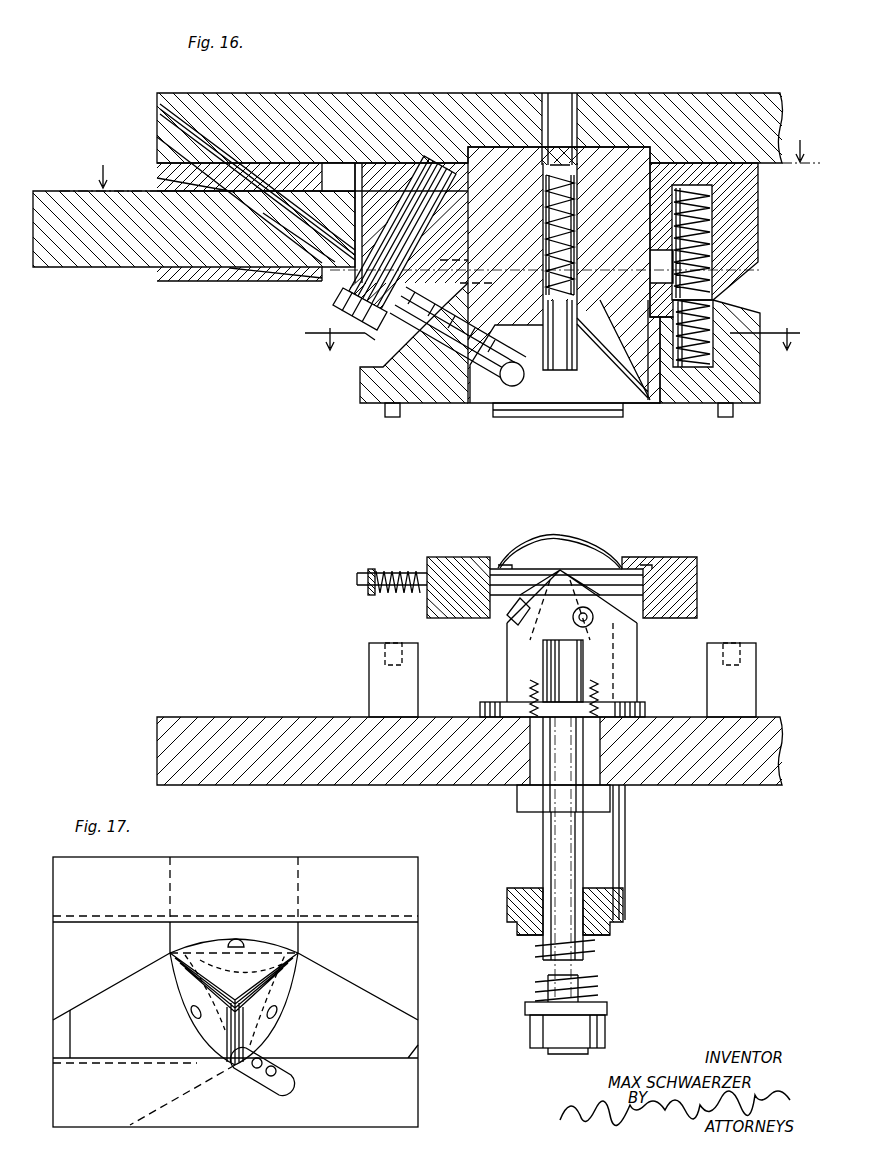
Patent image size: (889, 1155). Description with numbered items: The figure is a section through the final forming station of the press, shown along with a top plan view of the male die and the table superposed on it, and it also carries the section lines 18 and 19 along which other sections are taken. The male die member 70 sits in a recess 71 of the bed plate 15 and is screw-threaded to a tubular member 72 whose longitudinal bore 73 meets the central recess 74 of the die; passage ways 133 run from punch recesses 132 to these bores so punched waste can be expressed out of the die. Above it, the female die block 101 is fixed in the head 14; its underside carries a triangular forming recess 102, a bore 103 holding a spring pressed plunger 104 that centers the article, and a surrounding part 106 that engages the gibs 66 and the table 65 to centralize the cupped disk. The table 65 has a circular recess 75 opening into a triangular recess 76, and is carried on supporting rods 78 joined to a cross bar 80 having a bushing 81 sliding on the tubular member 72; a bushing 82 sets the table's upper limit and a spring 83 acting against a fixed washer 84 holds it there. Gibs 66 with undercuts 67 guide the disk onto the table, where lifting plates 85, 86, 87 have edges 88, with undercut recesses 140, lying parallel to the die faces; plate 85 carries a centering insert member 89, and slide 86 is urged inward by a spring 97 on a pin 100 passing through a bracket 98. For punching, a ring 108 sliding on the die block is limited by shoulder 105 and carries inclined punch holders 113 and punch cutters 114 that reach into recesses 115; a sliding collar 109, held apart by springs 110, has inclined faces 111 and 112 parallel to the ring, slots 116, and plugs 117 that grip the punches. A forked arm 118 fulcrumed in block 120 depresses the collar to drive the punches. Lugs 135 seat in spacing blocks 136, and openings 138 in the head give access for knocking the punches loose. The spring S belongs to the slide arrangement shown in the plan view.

In FIG. 16, the head 14 is at (316, 93).
In FIG. 16, the bed plate 15 is at (268, 716).
In FIG. 16, the section line 18— 18 is at (105, 167).
In FIG. 16, the section line 19— 19 is at (340, 350).
In FIG. 16, the table 65 is at (697, 588).
In FIG. 17, the table 65 is at (405, 950).
In FIG. 16, the gibs 66 is at (480, 558).
In FIG. 17, the gibs 66 is at (109, 875).
In FIG. 16, the undercut 67 is at (498, 566).
In FIG. 17, the undercut 67 is at (140, 916).
In FIG. 16, the male die member 70 is at (637, 657).
In FIG. 16, the recess 71 is at (646, 716).
In FIG. 16, the tubular member 72 is at (540, 766).
In FIG. 16, the longitudinal bore 73 is at (543, 855).
In FIG. 16, the central recess 74 is at (545, 665).
In FIG. 16, the circular recess 75 is at (472, 617).
In FIG. 16, the triangular recess 76 is at (640, 620).
In FIG. 16, the supporting rods 78 is at (610, 842).
In FIG. 16, the cross bar 80 is at (625, 900).
In FIG. 16, the bushing 81 is at (612, 930).
In FIG. 16, the bushing 82 is at (625, 857).
In FIG. 16, the spring 83 is at (595, 975).
In FIG. 16, the washer 84 is at (607, 1010).
In FIG. 16, the lifting plate 85 is at (605, 572).
In FIG. 17, the lifting plate 85 is at (350, 995).
In FIG. 16, the lifting plate 86 is at (450, 575).
In FIG. 17, the lifting plate 86 is at (200, 925).
In FIG. 17, the lifting plate 87 is at (201, 1000).
In FIG. 16, the edges 88 is at (511, 618).
In FIG. 16, the insert member 89 is at (590, 609).
In FIG. 17, the insert member 89 is at (262, 1060).
In FIG. 16, the spring 97 is at (395, 569).
In FIG. 16, the bracket 98 is at (372, 569).
In FIG. 16, the pin 100 is at (357, 578).
In FIG. 16, the female die block 101 is at (492, 142).
In FIG. 16, the forming recess 102 is at (628, 370).
In FIG. 16, the bore 103 is at (598, 205).
In FIG. 16, the spring pressed plunger 104 is at (556, 373).
In FIG. 16, the shoulder 105 is at (740, 252).
In FIG. 16, the part 106 is at (612, 417).
In FIG. 16, the ring 108 is at (360, 388).
In FIG. 16, the sliding collar 109 is at (758, 186).
In FIG. 16, the springs 110 is at (712, 210).
In FIG. 16, the inclined face 111 is at (745, 280).
In FIG. 16, the inclined surface 112 is at (735, 334).
In FIG. 16, the punch holders 113 is at (448, 340).
In FIG. 16, the punch cutters 114 is at (471, 337).
In FIG. 16, the recesses 115 is at (536, 363).
In FIG. 16, the slots 116 is at (350, 289).
In FIG. 16, the plugs 117 is at (418, 192).
In FIG. 16, the forked arm 118 is at (206, 250).
In FIG. 16, the block 120 is at (274, 280).
In FIG. 16, the recess 132 is at (628, 560).
In FIG. 16, the passage ways 133 is at (557, 558).
In FIG. 16, the lugs 135 is at (390, 410).
In FIG. 16, the spacing blocks 136 is at (369, 673).
In FIG. 16, the openings 138 is at (161, 135).
In FIG. 16, the undercut recesses 140 is at (526, 552).
In FIG. 17, the undercut recesses 140 is at (186, 1000).
In FIG. 16, the spring S is at (586, 563).
In FIG. 17, the spring S is at (293, 947).